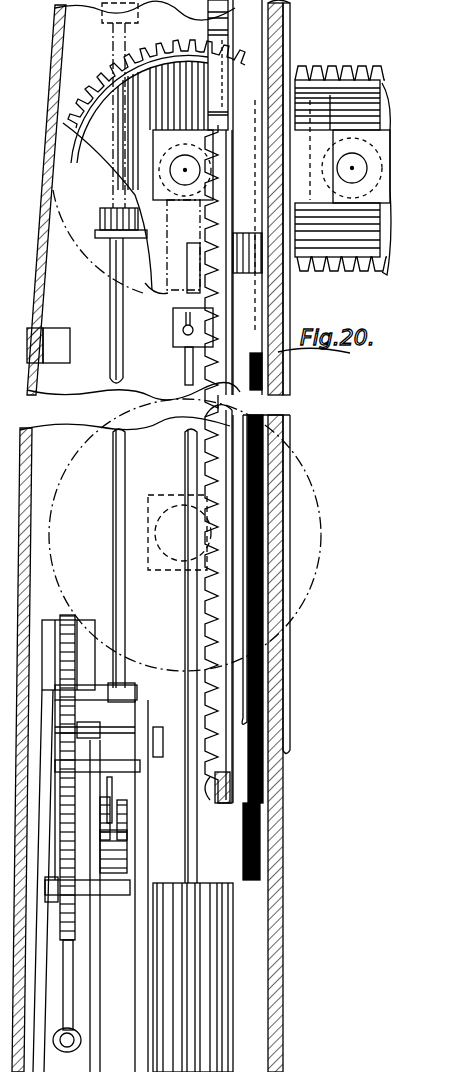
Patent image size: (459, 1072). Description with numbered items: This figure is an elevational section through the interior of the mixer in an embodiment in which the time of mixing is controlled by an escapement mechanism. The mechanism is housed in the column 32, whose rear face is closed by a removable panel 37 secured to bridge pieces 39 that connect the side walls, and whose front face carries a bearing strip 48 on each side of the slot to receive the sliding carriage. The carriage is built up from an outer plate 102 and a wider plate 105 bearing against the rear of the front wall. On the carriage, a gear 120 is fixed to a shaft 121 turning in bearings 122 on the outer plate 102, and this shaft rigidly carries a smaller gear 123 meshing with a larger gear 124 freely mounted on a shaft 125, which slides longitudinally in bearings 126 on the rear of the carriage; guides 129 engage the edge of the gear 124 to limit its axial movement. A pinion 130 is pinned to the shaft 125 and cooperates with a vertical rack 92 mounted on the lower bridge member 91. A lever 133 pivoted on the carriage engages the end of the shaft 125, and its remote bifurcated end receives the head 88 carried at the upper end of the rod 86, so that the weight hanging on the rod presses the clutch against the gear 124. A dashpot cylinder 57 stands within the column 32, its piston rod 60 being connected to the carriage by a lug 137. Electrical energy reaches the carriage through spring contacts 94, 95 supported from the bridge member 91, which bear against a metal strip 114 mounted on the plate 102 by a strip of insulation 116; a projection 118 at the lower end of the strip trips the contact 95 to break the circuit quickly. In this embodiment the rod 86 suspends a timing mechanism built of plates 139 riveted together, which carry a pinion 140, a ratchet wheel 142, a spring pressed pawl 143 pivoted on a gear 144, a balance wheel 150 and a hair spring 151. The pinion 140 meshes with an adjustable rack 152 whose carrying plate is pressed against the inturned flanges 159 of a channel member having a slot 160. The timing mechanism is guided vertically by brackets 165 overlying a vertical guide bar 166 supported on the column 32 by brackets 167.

The removable panel 37 is at (37, 243).
The bridge member 91 is at (0, 83).
The column 32 is at (0, 152).
The larger gear 124 is at (178, 77).
The lever 133 is at (100, 255).
The pinion 130 is at (160, 173).
The bearings 126 is at (170, 133).
The shaft 125 is at (172, 163).
The head 88 is at (118, 212).
The bridge pieces 39 is at (62, 340).
The lug 137 is at (173, 318).
The piston rod 60 is at (187, 360).
The guides 129 is at (250, 52).
The gear 120 is at (354, 153).
The shaft 121 is at (380, 78).
The bearings 122 is at (328, 256).
The outer plate 102 is at (290, 277).
The smaller gear 123 is at (390, 250).
The rack 92 is at (205, 405).
The metal strip 114 is at (243, 603).
The projection 118 is at (262, 707).
The plate 105 is at (265, 512).
The strip of insulation 116 is at (260, 570).
The bearing strip 48 is at (283, 455).
The piston rod 86 is at (117, 533).
The rack 152 is at (77, 618).
The inturned flanges 159 is at (82, 958).
The slot 160 is at (65, 1005).
The vertical guide bar 166 is at (143, 1030).
The balance wheel 150 is at (130, 700).
The hair spring 151 is at (83, 727).
The plates 139 is at (50, 748).
The brackets 167 is at (140, 762).
The ratchet wheel 142 is at (110, 820).
The brackets 165 is at (130, 822).
The pinion 140 is at (60, 810).
The spring pressed pawl 143 is at (117, 843).
The gear 144 is at (123, 873).
The spring contact 94 is at (247, 808).
The spring contact 95 is at (243, 850).
The dashpot cylinder 57 is at (217, 987).